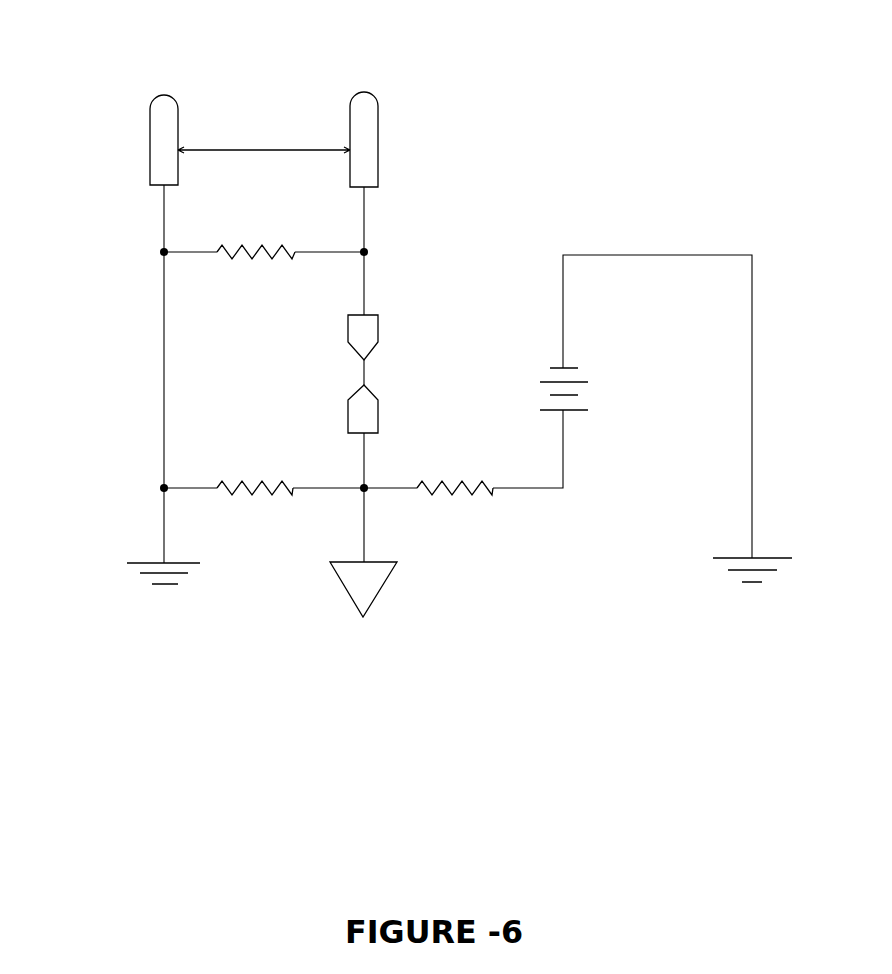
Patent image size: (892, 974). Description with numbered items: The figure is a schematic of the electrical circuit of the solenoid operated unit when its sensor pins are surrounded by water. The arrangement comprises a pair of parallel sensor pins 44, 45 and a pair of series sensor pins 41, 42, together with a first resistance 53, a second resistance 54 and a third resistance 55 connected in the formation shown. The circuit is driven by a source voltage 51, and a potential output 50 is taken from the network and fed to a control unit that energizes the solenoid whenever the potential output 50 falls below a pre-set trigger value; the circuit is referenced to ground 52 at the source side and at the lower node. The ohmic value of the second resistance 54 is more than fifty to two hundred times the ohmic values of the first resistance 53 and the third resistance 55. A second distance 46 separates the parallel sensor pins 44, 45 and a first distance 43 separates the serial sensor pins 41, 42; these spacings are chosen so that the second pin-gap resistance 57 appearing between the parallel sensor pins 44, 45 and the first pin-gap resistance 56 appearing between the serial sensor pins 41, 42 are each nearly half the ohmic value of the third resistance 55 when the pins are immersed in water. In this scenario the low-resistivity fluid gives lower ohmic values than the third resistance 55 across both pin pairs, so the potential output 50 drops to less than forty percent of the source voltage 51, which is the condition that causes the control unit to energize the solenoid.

The series sensor pin 41 is at (378, 342).
The series sensor pin 42 is at (377, 422).
The distance D1 43 is at (315, 370).
The parallel sensor pin 44 is at (148, 145).
The parallel sensor pin 45 is at (378, 148).
The distance D2 46 is at (253, 182).
The potential output VE 50 is at (360, 620).
The source voltage Vcc 51 is at (627, 400).
The ground 52 is at (166, 590).
The resistance R1 53 is at (452, 532).
The resistance R2 54 is at (260, 533).
The resistance R3 55 is at (252, 292).
The resistance rw1 56 is at (422, 362).
The resistance rw2 57 is at (263, 120).